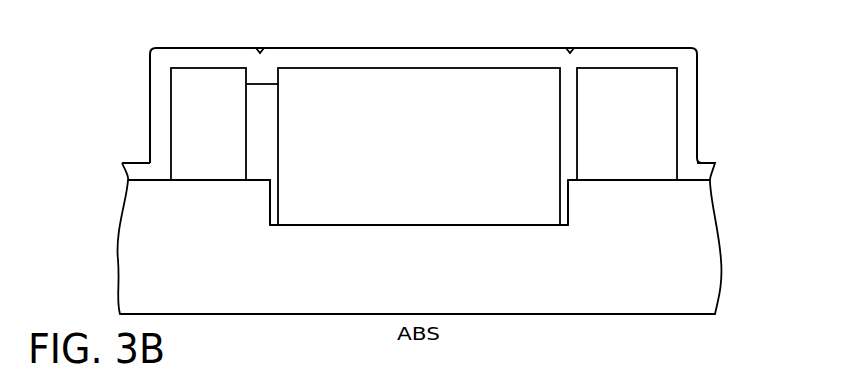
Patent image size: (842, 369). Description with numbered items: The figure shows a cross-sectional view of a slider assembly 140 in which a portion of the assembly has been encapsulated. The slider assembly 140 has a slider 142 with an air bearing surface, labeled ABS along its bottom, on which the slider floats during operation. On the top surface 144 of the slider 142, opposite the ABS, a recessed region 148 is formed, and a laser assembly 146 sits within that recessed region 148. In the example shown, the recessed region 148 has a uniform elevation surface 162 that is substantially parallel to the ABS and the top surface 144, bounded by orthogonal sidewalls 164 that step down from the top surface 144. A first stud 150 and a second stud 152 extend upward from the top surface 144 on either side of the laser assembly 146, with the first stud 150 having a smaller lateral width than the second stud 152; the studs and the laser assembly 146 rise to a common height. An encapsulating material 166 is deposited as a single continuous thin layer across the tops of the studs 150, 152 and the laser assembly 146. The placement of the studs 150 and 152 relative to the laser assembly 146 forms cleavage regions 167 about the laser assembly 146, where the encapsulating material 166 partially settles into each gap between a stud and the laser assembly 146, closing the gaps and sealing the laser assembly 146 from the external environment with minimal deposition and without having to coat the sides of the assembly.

The slider assembly 140 is at (118, 18).
The slider 142 is at (420, 238).
The top surface 144 is at (253, 198).
The laser assembly 146 is at (577, 84).
The recessed region 148 is at (270, 241).
The first stud 150 is at (224, 124).
The second stud 152 is at (627, 124).
The elevation surface 162 is at (513, 226).
The sidewalls 164 is at (570, 200).
The encapsulating material 166 is at (699, 66).
The cleavage regions 167 is at (259, 38).